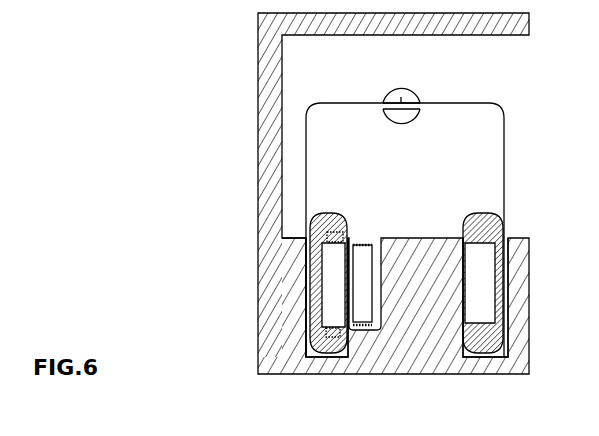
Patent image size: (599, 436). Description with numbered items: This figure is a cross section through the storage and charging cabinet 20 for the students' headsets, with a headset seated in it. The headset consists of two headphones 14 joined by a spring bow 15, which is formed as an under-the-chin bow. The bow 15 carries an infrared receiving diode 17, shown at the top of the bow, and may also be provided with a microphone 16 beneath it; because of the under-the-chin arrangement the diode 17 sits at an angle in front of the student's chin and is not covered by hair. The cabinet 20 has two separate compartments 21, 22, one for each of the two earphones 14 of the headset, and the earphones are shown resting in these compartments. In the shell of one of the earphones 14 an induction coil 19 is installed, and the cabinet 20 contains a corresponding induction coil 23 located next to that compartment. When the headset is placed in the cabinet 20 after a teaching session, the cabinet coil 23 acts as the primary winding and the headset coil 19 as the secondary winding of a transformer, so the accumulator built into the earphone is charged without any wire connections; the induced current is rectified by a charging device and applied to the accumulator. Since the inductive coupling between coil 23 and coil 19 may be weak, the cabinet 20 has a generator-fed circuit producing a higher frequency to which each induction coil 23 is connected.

The headphones 14 is at (315, 230).
The spring bow 15 is at (473, 105).
The microphone 16 is at (400, 118).
The infrared receiving diode 17 is at (400, 95).
The induction coil 19 is at (332, 337).
The storage cabinet 20 is at (438, 348).
The compartment 21 is at (308, 348).
The compartment 22 is at (498, 352).
The induction coil 23 is at (360, 312).